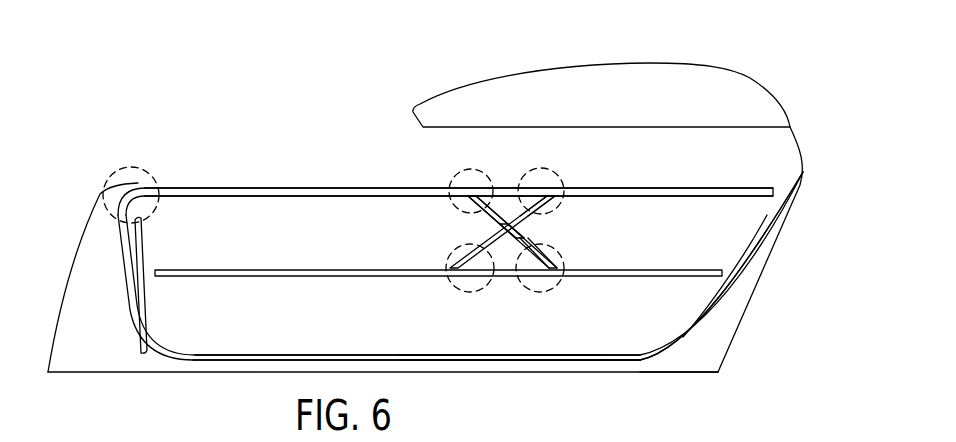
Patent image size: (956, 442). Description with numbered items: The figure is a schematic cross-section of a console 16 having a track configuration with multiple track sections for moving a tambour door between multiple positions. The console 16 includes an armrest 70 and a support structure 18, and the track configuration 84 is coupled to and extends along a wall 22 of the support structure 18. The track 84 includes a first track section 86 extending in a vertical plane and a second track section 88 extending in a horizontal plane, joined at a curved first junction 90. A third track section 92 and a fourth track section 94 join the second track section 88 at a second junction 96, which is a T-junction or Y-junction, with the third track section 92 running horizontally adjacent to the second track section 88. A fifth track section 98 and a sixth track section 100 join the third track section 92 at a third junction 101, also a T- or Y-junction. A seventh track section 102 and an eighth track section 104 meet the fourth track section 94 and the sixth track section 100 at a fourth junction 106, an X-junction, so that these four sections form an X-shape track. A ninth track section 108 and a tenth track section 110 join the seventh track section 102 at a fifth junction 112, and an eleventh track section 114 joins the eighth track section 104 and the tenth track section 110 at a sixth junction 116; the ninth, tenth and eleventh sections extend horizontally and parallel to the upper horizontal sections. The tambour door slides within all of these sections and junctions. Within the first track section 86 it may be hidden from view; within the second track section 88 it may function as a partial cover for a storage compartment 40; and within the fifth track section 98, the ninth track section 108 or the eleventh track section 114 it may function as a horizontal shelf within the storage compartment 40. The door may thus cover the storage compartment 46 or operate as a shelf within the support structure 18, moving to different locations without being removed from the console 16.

The console 16 is at (63, 125).
The support structure 18 is at (793, 132).
The wall 22 is at (707, 365).
The storage compartment 40 is at (488, 360).
The storage compartment 46 is at (637, 333).
The armrest 70 is at (630, 70).
The track configuration 84 is at (259, 134).
The first track section 86 is at (125, 297).
The second track section 88 is at (223, 190).
The first junction 90 is at (133, 167).
The third track section 92 is at (503, 193).
The fourth track section 94 is at (470, 220).
The second junction 96 is at (453, 186).
The fifth track section 98 is at (645, 189).
The sixth track section 100 is at (522, 217).
The third junction 101 is at (555, 175).
The seventh track section 102 is at (535, 243).
The eighth track section 104 is at (480, 238).
The fourth junction 106 is at (525, 234).
The ninth track section 108 is at (690, 268).
The tenth track section 110 is at (507, 274).
The fifth junction 112 is at (553, 288).
The eleventh track section 114 is at (242, 287).
The sixth junction 116 is at (467, 290).